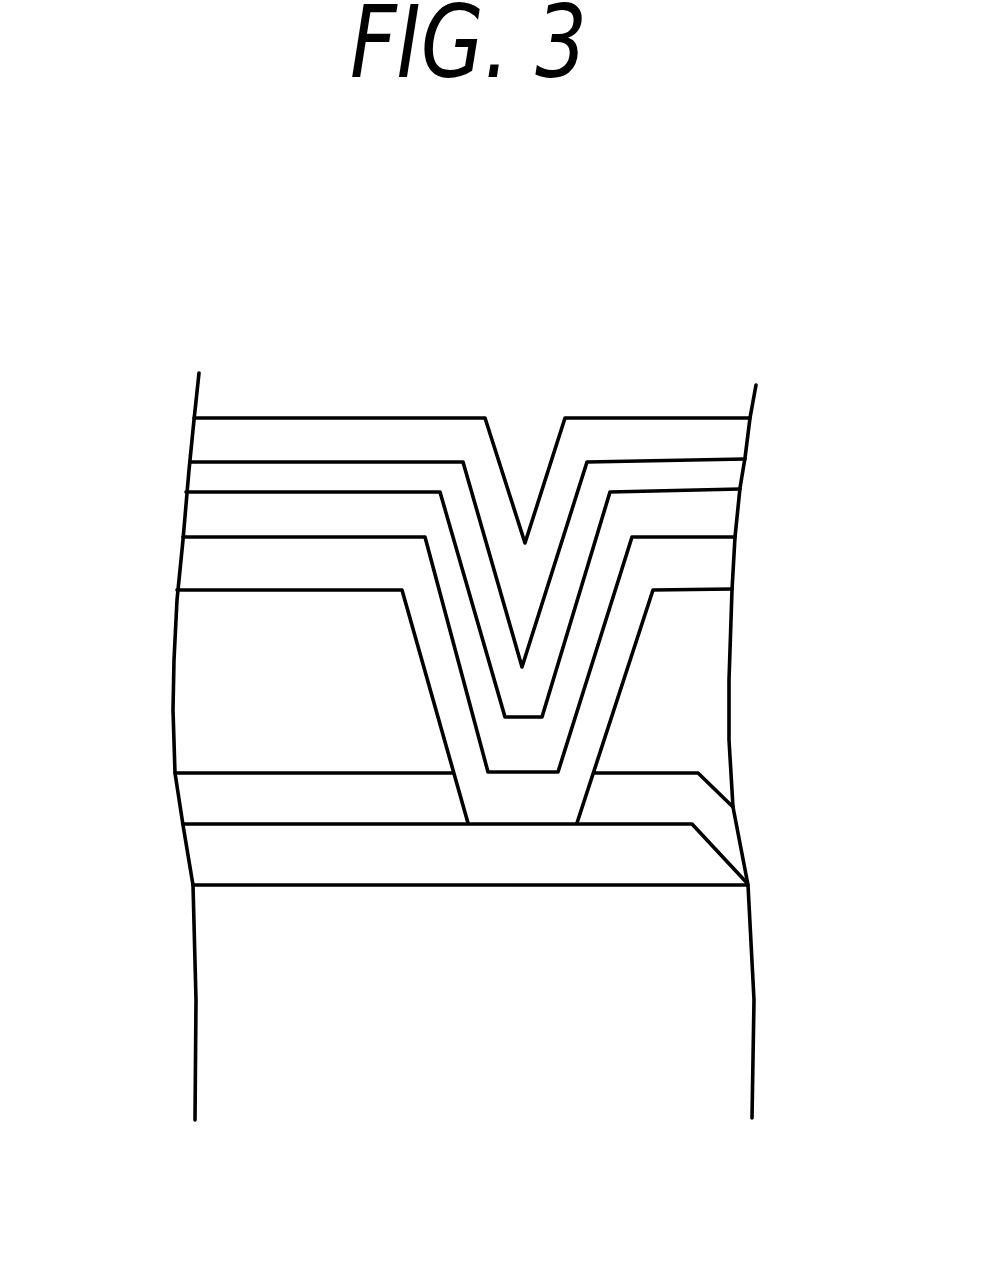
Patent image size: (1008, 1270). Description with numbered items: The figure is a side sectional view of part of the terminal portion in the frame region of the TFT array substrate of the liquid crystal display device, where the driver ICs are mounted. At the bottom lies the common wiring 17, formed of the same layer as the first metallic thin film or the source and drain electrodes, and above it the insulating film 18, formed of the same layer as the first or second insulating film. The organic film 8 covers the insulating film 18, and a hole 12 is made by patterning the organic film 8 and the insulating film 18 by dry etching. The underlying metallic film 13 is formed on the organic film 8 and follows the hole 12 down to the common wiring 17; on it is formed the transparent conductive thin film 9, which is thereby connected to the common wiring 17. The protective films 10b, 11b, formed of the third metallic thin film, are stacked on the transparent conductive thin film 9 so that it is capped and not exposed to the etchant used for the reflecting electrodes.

The organic film 8 is at (183, 677).
The transparent conductive thin film 9 is at (193, 512).
The protective film 10b is at (733, 478).
The protective film 11b is at (740, 430).
The hole 12 is at (543, 370).
The underlying metallic film 13 is at (193, 565).
The common wiring 17 is at (203, 858).
The insulating film 18 is at (192, 803).